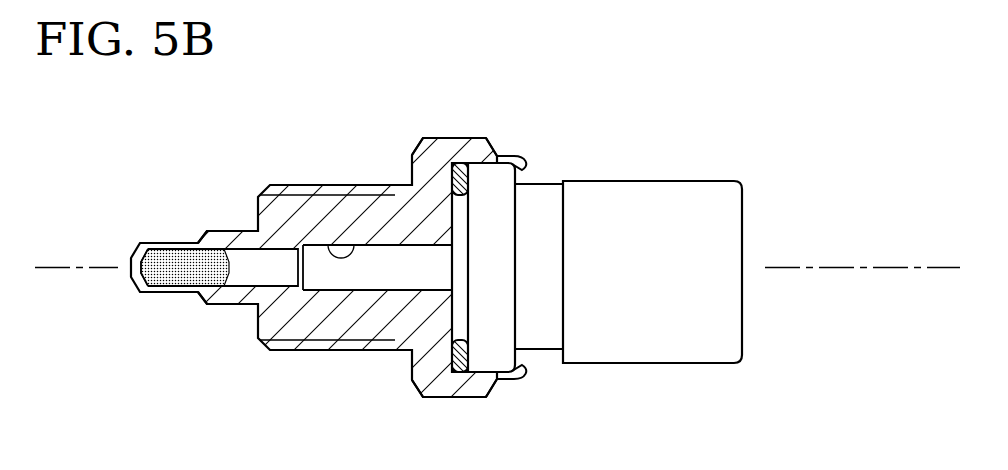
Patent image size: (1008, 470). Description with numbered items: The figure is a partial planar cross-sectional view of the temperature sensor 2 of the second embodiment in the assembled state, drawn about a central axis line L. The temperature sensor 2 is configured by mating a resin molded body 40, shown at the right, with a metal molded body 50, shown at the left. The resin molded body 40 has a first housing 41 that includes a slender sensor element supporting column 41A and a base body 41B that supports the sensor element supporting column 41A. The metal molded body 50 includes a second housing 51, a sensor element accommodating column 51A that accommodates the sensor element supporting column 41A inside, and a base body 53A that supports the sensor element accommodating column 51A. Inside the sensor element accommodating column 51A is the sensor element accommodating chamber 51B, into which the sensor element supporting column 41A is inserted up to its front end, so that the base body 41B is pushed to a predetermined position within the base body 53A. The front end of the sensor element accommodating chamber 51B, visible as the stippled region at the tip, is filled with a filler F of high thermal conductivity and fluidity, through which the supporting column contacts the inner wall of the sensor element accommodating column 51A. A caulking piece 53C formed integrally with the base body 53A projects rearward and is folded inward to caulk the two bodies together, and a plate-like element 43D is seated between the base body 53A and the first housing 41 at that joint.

The temperature sensor 2 is at (778, 143).
The resin molded body 40 is at (653, 168).
The first housing 41 is at (655, 365).
The sensor element supporting column 41A is at (385, 291).
The base body 41B is at (698, 365).
The flange plate 43D is at (520, 360).
The metal molded body 50 is at (370, 172).
The second housing 51 is at (345, 352).
The sensor element accommodating column 51A is at (226, 231).
The sensor element accommodating chamber 51B is at (341, 234).
The base body 53A is at (458, 138).
The caulking piece 53C is at (518, 156).
The filler F is at (177, 279).
The axis line L is at (63, 268).